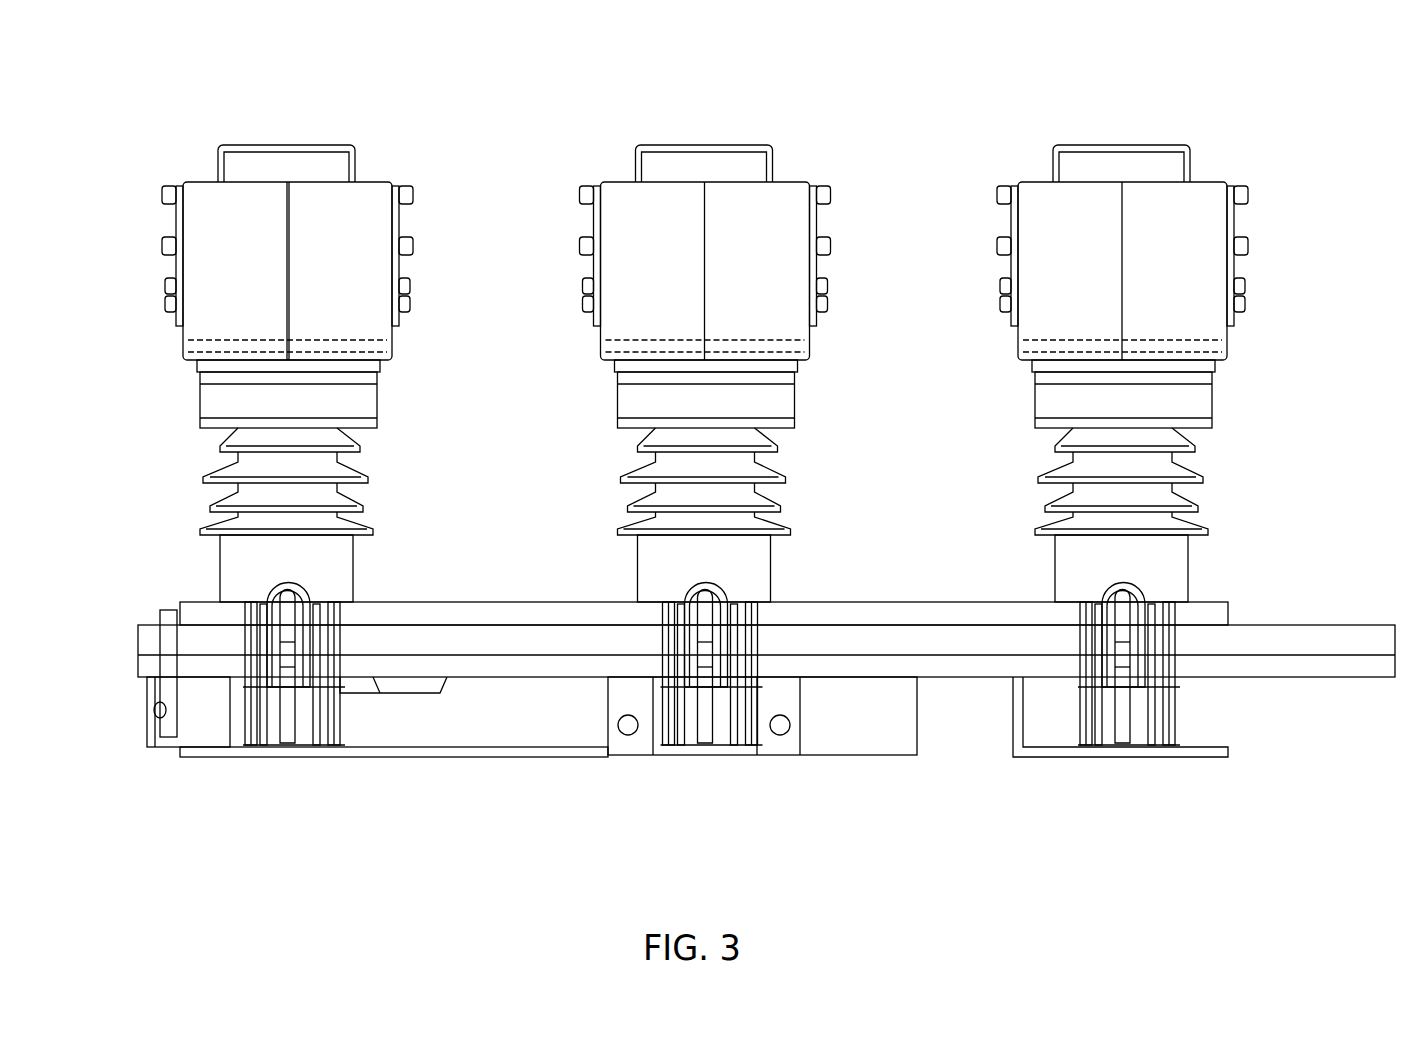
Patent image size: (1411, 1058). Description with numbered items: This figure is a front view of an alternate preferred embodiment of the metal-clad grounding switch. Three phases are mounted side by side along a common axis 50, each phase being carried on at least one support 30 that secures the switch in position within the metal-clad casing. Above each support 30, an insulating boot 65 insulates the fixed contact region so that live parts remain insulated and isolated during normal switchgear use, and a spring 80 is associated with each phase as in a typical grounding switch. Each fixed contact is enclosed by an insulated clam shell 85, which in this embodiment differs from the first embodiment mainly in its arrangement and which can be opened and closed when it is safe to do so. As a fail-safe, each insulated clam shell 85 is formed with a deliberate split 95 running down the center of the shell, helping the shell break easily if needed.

The support 30 is at (497, 627).
The axis 50 is at (1338, 653).
The insulating boot 65 is at (190, 388).
The spring 80 is at (300, 670).
The insulated clam shell 85 is at (245, 227).
The split 95 is at (290, 225).